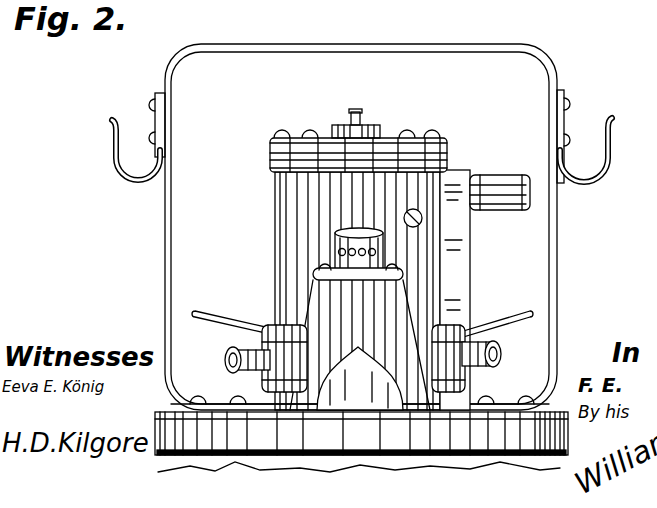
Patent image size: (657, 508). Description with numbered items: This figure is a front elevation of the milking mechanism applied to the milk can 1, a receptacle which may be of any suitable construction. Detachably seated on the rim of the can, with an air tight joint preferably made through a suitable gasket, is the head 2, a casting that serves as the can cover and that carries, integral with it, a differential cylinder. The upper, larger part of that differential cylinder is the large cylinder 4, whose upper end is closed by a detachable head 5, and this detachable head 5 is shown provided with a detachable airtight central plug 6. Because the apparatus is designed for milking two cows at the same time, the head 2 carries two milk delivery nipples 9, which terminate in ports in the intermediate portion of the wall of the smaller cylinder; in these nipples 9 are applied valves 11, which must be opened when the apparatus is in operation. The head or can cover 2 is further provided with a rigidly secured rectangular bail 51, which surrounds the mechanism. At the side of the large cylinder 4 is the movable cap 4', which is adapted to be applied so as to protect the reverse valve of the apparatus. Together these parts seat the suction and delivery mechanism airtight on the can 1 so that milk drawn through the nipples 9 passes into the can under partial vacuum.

The milk can 1 is at (361, 442).
The head 2 is at (496, 414).
The large cylinder 4 is at (356, 290).
The movable cap 4' is at (500, 175).
The detachable head 5 is at (291, 152).
The central plug 6 is at (361, 127).
The milk delivery nipples 9 is at (226, 360).
The valves 11 is at (494, 301).
The rectangular bail 51 is at (556, 244).